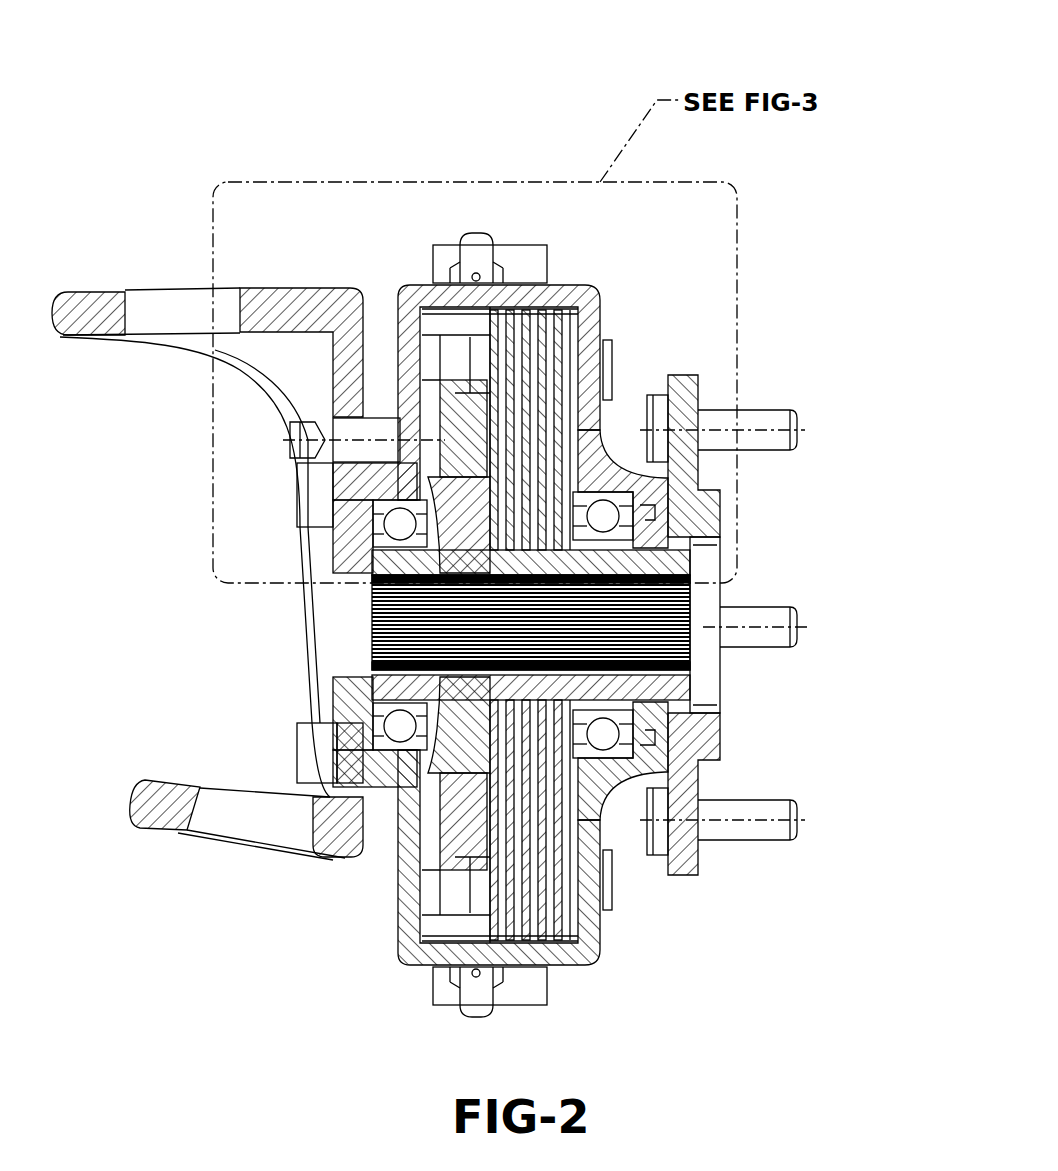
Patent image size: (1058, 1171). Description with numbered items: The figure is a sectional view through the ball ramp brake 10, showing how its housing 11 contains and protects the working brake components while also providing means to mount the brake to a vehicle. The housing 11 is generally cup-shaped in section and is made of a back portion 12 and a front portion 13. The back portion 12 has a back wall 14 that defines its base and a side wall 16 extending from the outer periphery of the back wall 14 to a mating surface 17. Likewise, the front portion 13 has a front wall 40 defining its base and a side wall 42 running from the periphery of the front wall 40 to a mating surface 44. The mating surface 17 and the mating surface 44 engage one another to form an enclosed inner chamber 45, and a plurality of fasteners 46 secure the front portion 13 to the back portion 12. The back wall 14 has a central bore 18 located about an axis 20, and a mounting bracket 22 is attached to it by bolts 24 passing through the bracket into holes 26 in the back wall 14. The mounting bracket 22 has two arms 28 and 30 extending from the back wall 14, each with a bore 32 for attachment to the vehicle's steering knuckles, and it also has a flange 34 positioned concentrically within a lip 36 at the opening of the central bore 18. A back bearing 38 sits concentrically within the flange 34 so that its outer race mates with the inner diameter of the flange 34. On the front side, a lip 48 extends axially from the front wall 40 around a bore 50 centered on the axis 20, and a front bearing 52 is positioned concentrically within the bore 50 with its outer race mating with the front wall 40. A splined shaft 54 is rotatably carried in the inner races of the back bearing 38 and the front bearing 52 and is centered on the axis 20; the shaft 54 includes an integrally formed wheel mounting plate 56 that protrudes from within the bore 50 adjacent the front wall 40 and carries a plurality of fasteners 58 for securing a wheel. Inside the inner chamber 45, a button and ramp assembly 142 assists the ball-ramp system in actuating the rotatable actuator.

The brake 10 is at (207, 107).
The housing 11 is at (402, 943).
The back portion 12 is at (407, 895).
The front portion 13 is at (610, 944).
The back wall 14 is at (396, 340).
The side wall 16 is at (433, 950).
The mating surface 17 is at (477, 945).
The central bore 18 is at (372, 625).
The axis 20 is at (807, 627).
The mounting bracket 22 is at (172, 833).
The bolts 24 is at (307, 468).
The holes 26 is at (320, 433).
The arm 28 is at (77, 318).
The arm 30 is at (140, 803).
The bore 32 is at (118, 298).
The flange 34 is at (340, 757).
The lip 36 is at (372, 722).
The back bearing 38 is at (380, 540).
The front wall 40 is at (602, 440).
The side wall 42 is at (560, 300).
The mating surface 44 is at (490, 977).
The inner chamber 45 is at (445, 323).
The fasteners 46 is at (548, 990).
The lip 48 is at (632, 737).
The bore 50 is at (660, 505).
The front bearing 52 is at (620, 713).
The splined shaft 54 is at (650, 612).
The wheel mounting plate 56 is at (690, 466).
The fasteners 58 is at (753, 418).
The button and ramp assembly 142 is at (470, 312).